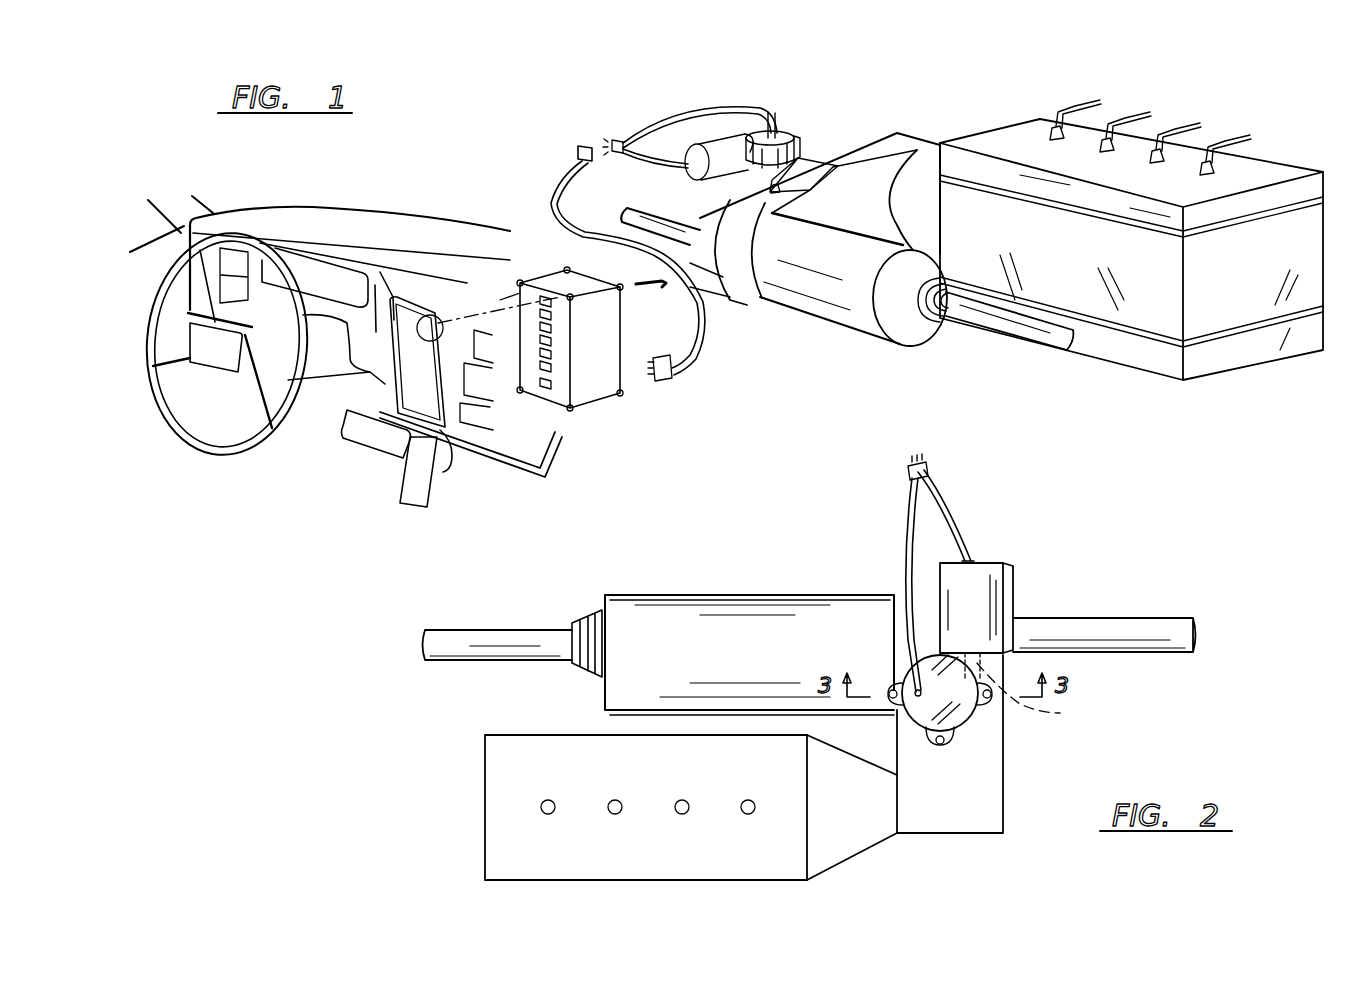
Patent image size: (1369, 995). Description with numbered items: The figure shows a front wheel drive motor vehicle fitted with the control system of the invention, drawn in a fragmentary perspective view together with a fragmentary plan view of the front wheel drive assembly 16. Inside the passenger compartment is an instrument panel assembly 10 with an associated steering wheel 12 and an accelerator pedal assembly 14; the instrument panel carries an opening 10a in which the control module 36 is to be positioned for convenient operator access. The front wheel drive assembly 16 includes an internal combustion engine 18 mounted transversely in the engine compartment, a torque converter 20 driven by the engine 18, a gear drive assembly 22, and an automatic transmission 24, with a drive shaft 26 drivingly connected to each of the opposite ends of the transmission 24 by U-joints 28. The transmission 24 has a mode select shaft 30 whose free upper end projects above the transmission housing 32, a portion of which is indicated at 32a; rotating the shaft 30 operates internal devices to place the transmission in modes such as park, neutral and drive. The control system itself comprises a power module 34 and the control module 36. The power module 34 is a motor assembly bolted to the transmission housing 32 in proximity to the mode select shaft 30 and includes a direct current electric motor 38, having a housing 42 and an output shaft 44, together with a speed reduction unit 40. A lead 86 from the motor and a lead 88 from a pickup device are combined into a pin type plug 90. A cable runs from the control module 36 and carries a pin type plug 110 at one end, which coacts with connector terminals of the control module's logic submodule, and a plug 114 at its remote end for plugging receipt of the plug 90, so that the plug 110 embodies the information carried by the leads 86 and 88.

In FIG. 1, the instrument panel assembly 10 is at (422, 238).
In FIG. 1, the dashboard opening 10a is at (432, 322).
In FIG. 1, the steering wheel 12 is at (203, 445).
In FIG. 1, the accelerator pedal assembly 14 is at (395, 486).
In FIG. 1, the front wheel drive assembly 16 is at (1131, 216).
In FIG. 1, the internal combustion engine 18 is at (1262, 190).
In FIG. 2, the internal combustion engine 18 is at (483, 820).
In FIG. 2, the torque converter 20 is at (860, 812).
In FIG. 1, the gear drive assembly 22 is at (878, 140).
In FIG. 2, the gear drive assembly 22 is at (958, 840).
In FIG. 1, the automatic transmission 24 is at (845, 300).
In FIG. 2, the automatic transmission 24 is at (795, 592).
In FIG. 1, the drive shaft 26 is at (652, 210).
In FIG. 2, the drive shaft 26 is at (470, 628).
In FIG. 1, the U-joint 28 is at (925, 318).
In FIG. 2, the U-joint 28 is at (593, 612).
In FIG. 1, the mode select shaft 30 is at (768, 192).
In FIG. 1, the transmission housing 32 is at (722, 246).
In FIG. 2, the transmission housing 32 is at (767, 657).
In FIG. 1, the cylinder band 32a is at (752, 215).
In FIG. 1, the power module 34 is at (800, 134).
In FIG. 2, the power module 34 is at (968, 742).
In FIG. 1, the control module 36 is at (600, 410).
In FIG. 1, the electric motor 38 is at (718, 148).
In FIG. 2, the electric motor 38 is at (1006, 617).
In FIG. 1, the speed reduction unit 40 is at (760, 136).
In FIG. 2, the speed reduction unit 40 is at (968, 718).
In FIG. 2, the motor housing 42 is at (982, 618).
In FIG. 2, the output shaft 44 is at (1033, 694).
In FIG. 2, the lead 86 is at (960, 530).
In FIG. 1, the lead 88 is at (735, 106).
In FIG. 2, the lead 88 is at (905, 552).
In FIG. 1, the pin type plug 90 is at (617, 140).
In FIG. 2, the pin type plug 90 is at (930, 466).
In FIG. 1, the pin type plug 110 is at (672, 372).
In FIG. 1, the plug 114 is at (584, 145).